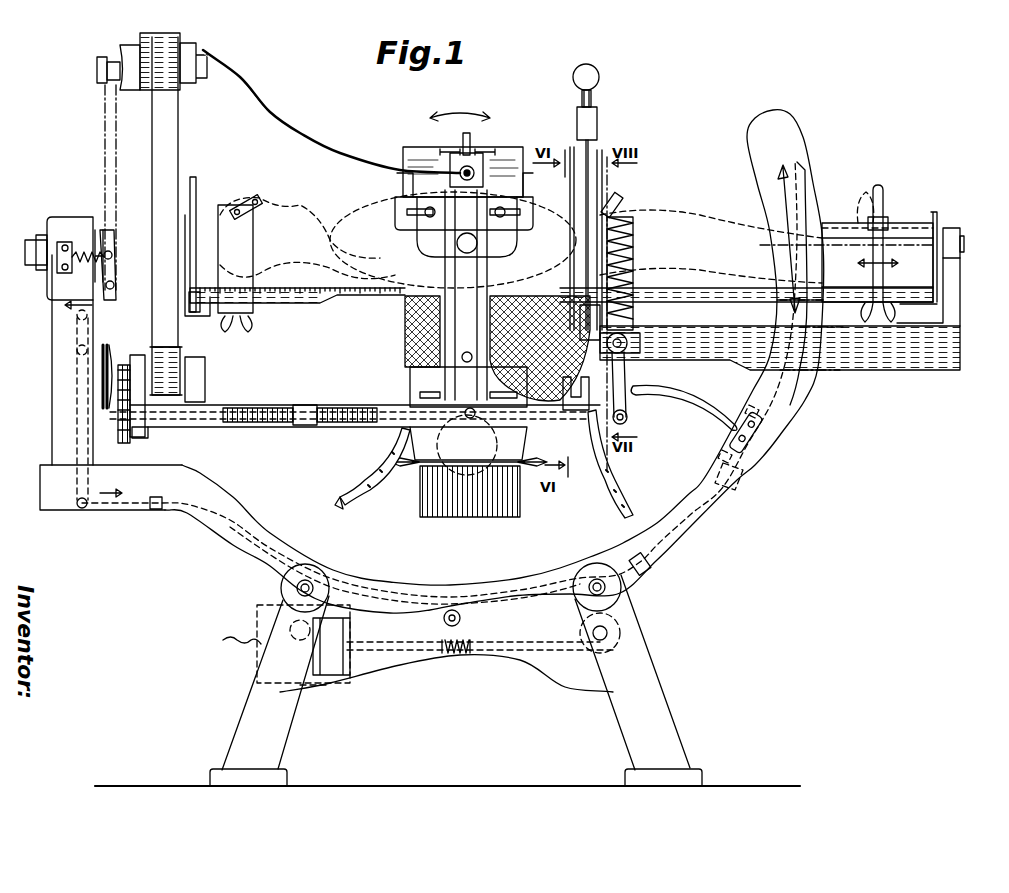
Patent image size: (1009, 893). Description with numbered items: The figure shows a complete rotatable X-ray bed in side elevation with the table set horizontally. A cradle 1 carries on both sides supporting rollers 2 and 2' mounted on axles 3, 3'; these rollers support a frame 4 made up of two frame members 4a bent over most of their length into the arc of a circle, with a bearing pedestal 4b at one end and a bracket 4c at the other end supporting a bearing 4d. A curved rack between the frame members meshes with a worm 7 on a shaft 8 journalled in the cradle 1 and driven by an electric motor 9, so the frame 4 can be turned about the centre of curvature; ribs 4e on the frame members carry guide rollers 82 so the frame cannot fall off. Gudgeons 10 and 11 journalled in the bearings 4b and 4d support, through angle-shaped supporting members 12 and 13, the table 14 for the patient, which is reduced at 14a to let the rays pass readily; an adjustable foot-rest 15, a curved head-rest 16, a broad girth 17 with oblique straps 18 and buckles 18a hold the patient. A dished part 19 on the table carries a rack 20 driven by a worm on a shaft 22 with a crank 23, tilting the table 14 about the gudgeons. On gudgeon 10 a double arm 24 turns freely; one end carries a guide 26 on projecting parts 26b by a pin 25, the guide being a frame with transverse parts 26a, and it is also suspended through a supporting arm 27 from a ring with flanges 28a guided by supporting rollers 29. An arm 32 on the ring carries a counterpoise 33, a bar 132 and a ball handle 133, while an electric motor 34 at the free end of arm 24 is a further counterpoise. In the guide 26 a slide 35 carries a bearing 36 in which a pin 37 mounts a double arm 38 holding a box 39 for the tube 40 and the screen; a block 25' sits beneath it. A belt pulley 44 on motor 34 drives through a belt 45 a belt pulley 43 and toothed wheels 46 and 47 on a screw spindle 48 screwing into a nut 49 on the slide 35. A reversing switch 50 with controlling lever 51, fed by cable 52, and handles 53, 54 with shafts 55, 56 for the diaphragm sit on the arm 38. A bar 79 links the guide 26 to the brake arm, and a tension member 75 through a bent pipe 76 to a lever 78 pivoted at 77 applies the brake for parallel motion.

The cradle 1 is at (257, 705).
The supporting roller 2 is at (292, 637).
The axle 3 is at (266, 630).
The frame 4 is at (68, 507).
The frame member 4a is at (712, 487).
The bearing pedestal 4b is at (60, 338).
The bracket 4c is at (900, 360).
The bearing 4d is at (952, 288).
The rib 4e is at (690, 537).
The worm 7 is at (455, 655).
The shaft 8 is at (383, 652).
The electric motor 9 is at (325, 676).
The gudgeon 10 is at (47, 255).
The gudgeon 11 is at (964, 244).
The supporting member 12 is at (194, 216).
The supporting member 13 is at (936, 212).
The table 14 is at (705, 303).
The reduced portion of table 14a is at (372, 297).
The foot-rest 15 is at (883, 195).
The head-rest 16 is at (245, 244).
The girth 17 is at (420, 316).
The strap 18 is at (355, 505).
The buckle 18a is at (257, 205).
The dished part 19 is at (635, 250).
The rack 20 is at (635, 266).
The shaft 22 is at (625, 355).
The crank 23 is at (628, 417).
The double arm 24 is at (163, 143).
The pin 25 is at (198, 371).
The block 25' is at (485, 441).
The guide 26 is at (245, 414).
The transverse part 26a is at (149, 430).
The projecting part 26b is at (222, 343).
The supporting arm 27 is at (530, 368).
The flange 28a is at (603, 165).
The supporting roller 29 is at (582, 305).
The arm 32 is at (571, 160).
The counterpoise 33 is at (598, 115).
The electric motor 34 is at (143, 92).
The slide 35 is at (316, 405).
The bearing 36 is at (415, 392).
The pin 37 is at (420, 355).
The double arm 38 is at (490, 263).
The box 39 is at (430, 510).
The tube 40 is at (406, 470).
The belt pulley 43 is at (106, 366).
The belt pulley 44 is at (97, 68).
The belt 45 is at (110, 146).
The toothed wheel 46 is at (116, 386).
The toothed wheel 47 is at (122, 432).
The screw spindle 48 is at (270, 424).
The nut 49 is at (300, 424).
The reversing switch 50 is at (472, 168).
The controlling lever 51 is at (472, 134).
The cable 52 is at (295, 143).
The handle 53 is at (440, 151).
The handle 54 is at (483, 160).
The shaft 55 is at (450, 231).
The shaft 56 is at (480, 231).
The tension member 75 is at (116, 500).
The bent pipe 76 is at (216, 565).
The pivot 77 is at (748, 435).
The lever 78 is at (712, 420).
The bar 79 is at (117, 310).
The guide roller 82 is at (592, 585).
The bar 132 is at (591, 100).
The ball handle 133 is at (598, 75).
The supporting roller 2' is at (646, 656).
The axle 3' is at (630, 633).